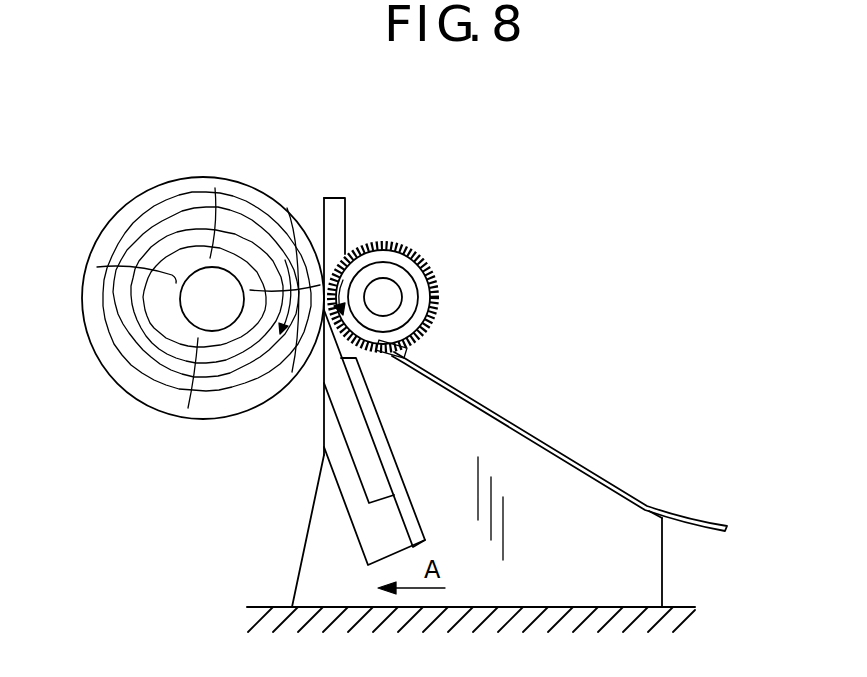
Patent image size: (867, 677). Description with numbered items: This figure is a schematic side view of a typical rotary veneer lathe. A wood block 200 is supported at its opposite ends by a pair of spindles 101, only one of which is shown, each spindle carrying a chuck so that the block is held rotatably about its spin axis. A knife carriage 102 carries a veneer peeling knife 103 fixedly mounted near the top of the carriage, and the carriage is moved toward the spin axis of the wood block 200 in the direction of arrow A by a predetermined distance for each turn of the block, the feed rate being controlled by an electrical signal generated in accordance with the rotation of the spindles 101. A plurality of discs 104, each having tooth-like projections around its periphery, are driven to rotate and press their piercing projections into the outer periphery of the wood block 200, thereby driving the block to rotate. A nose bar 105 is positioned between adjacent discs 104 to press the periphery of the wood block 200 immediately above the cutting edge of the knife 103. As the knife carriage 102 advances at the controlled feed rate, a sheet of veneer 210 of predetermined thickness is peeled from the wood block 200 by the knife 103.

The wood block 200 is at (193, 230).
The spindle 101 is at (184, 316).
The nose bar 105 is at (333, 217).
The disc 104 is at (382, 255).
The veneer peeling knife 103 is at (348, 418).
The knife carriage 102 is at (333, 583).
The sheet of veneer 210 is at (560, 450).